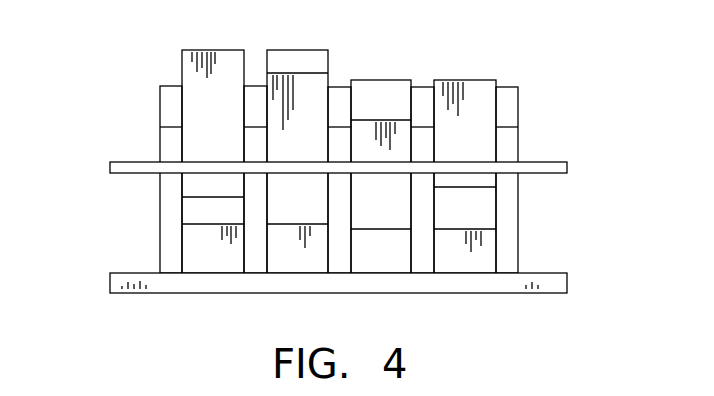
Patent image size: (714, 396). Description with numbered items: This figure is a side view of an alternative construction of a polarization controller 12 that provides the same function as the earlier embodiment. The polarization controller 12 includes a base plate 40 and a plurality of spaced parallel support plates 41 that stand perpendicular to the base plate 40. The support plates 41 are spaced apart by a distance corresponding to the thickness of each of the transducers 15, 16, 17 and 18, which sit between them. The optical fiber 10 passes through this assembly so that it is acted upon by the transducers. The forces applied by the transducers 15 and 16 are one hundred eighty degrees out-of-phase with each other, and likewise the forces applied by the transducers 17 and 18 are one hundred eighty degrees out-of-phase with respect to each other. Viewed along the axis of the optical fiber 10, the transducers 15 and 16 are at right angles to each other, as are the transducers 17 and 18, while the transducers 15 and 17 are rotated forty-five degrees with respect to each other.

The optical fiber 10 is at (540, 162).
The polarization controller 12 is at (110, 106).
The transducer 15 is at (210, 50).
The transducer 16 is at (298, 50).
The transducer 17 is at (390, 80).
The transducer 18 is at (467, 80).
The base plate 40 is at (543, 273).
The support plates 41 is at (170, 273).